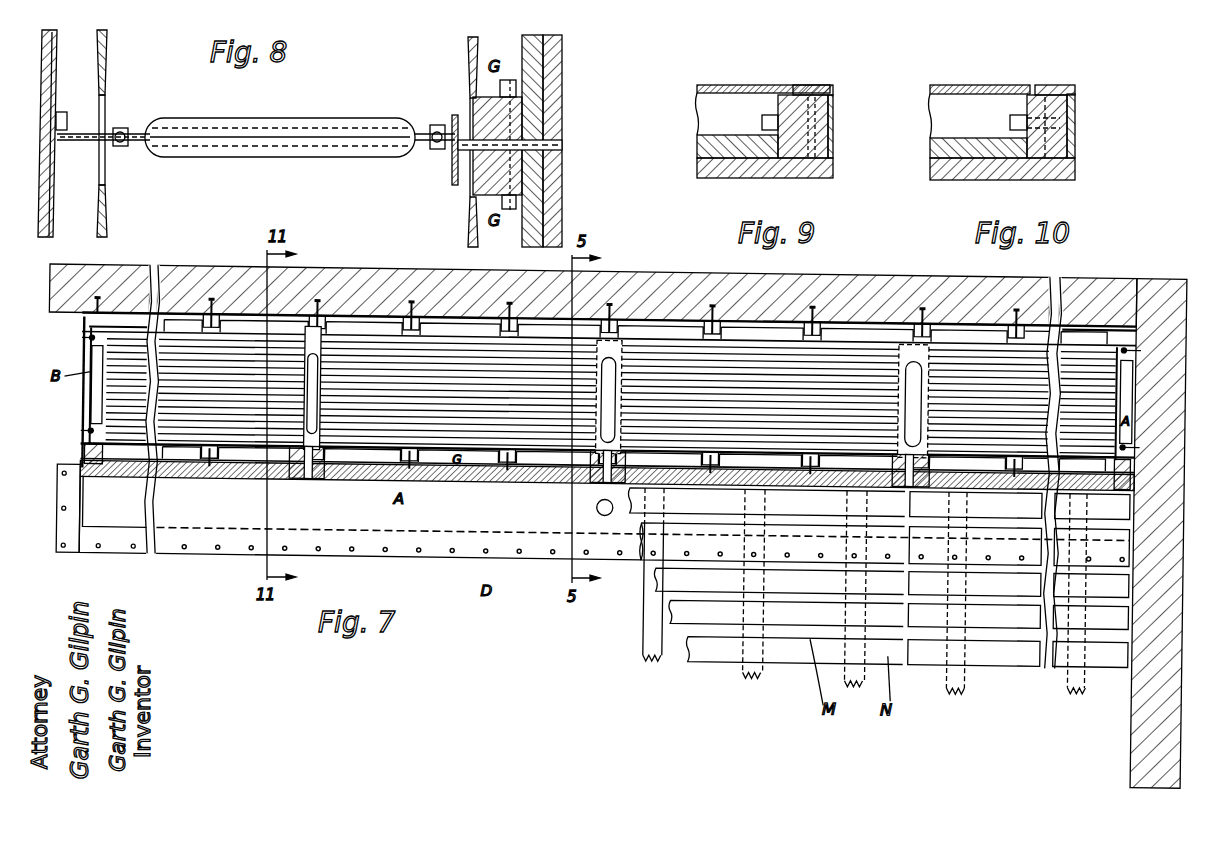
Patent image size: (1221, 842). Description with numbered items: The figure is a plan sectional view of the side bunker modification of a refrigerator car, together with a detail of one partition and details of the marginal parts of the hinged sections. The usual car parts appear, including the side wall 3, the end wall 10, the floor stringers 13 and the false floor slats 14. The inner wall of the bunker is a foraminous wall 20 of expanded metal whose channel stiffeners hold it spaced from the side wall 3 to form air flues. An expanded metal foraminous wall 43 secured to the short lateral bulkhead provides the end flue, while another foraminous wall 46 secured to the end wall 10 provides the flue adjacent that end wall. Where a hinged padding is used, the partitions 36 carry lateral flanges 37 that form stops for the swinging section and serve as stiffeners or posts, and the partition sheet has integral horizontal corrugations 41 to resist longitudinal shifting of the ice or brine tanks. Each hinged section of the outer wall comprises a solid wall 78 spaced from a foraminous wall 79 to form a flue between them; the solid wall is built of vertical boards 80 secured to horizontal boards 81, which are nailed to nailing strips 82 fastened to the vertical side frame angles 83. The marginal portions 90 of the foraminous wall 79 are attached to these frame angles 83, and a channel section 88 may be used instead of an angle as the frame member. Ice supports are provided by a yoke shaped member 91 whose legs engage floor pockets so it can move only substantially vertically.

In FIG. 8, the side wall 3 is at (47, 236).
In FIG. 7, the side wall 3 is at (410, 279).
In FIG. 7, the end wall 10 is at (1150, 748).
In FIG. 7, the floor stringers 13 is at (763, 656).
In FIG. 7, the false floor slats 14 is at (737, 648).
In FIG. 8, the foraminous wall 20 is at (107, 170).
In FIG. 7, the foraminous wall 20 is at (647, 329).
In FIG. 8, the partitions 36 is at (362, 160).
In FIG. 8, the lateral flanges 37 is at (451, 166).
In FIG. 8, the horizontal corrugations 41 is at (238, 158).
In FIG. 7, the foraminous wall 43 is at (117, 349).
In FIG. 7, the foraminous wall 46 is at (1120, 346).
In FIG. 8, the solid wall 78 is at (552, 186).
In FIG. 8, the foraminous wall 79 is at (470, 242).
In FIG. 8, the vertical boards 80 is at (522, 48).
In FIG. 10, the vertical boards 80 is at (933, 148).
In FIG. 8, the horizontal boards 81 is at (560, 35).
In FIG. 10, the horizontal boards 81 is at (935, 172).
In FIG. 8, the nailing strips 82 is at (546, 150).
In FIG. 10, the nailing strips 82 is at (1045, 150).
In FIG. 8, the frame angles 83 is at (468, 110).
In FIG. 10, the frame angles 83 is at (1075, 111).
In FIG. 9, the channel section 88 is at (835, 132).
In FIG. 10, the marginal portions 90 is at (1036, 87).
In FIG. 7, the yoke shaped member 91 is at (590, 421).